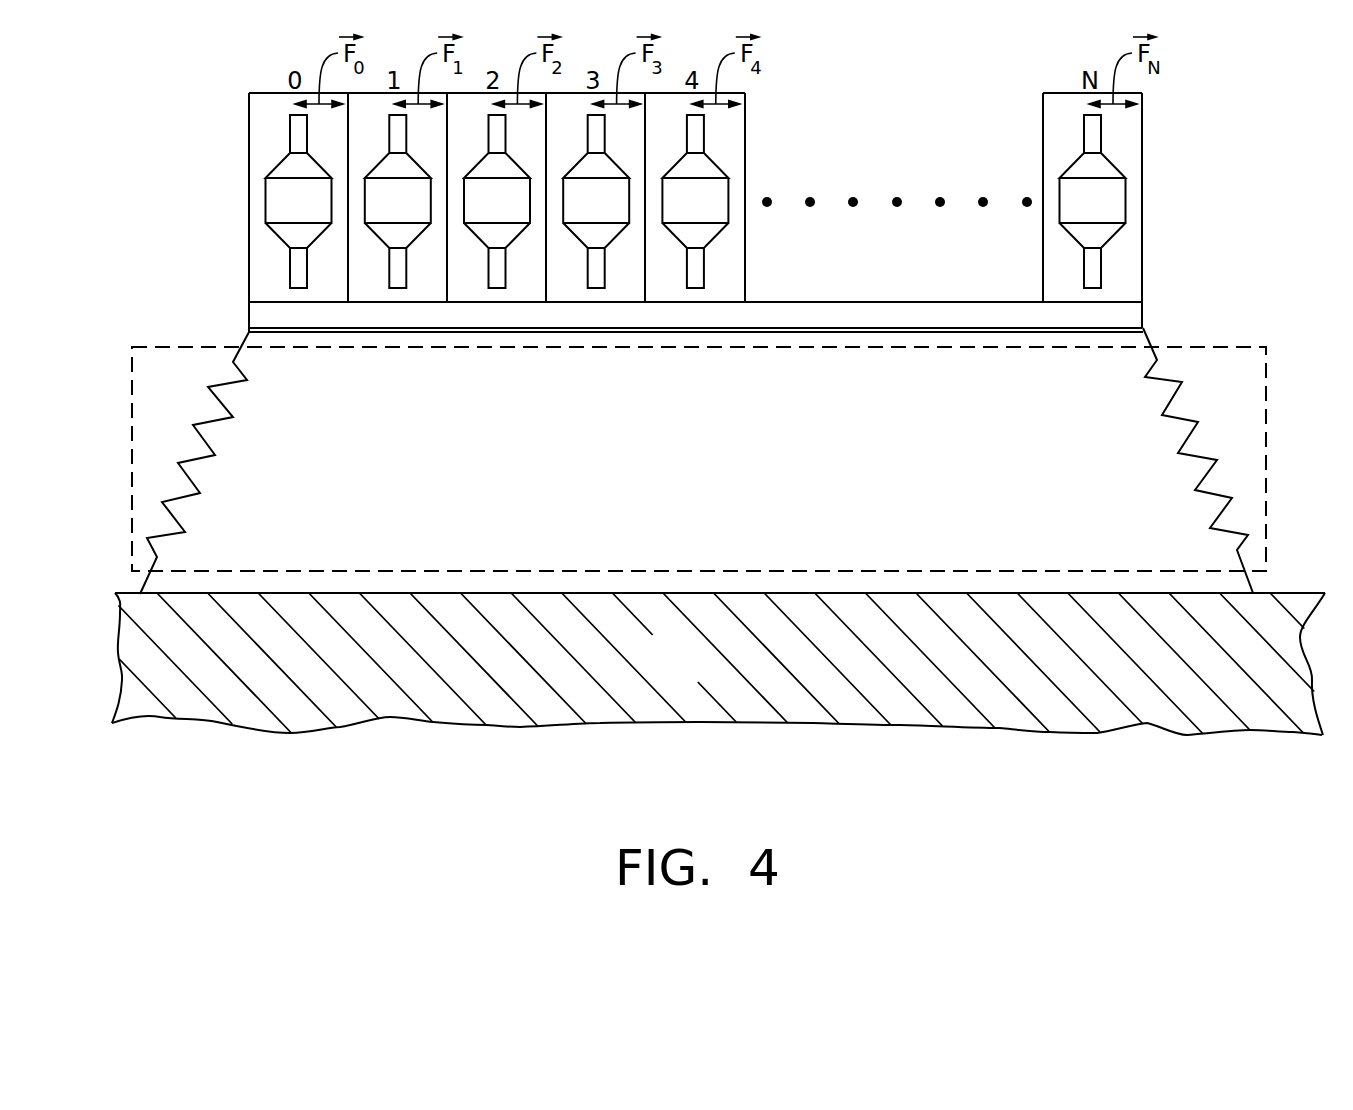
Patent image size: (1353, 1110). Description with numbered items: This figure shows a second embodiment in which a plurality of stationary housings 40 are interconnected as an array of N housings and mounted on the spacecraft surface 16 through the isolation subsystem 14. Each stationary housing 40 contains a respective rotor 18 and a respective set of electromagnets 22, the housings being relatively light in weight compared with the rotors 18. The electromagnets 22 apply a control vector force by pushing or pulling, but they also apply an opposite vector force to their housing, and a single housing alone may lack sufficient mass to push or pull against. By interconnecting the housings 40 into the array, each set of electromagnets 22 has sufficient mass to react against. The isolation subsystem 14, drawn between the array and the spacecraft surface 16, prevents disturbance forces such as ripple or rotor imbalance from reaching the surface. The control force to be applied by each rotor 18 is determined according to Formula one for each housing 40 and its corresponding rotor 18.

The isolation subsystem 14 is at (217, 348).
The spacecraft surface 16 is at (692, 671).
The rotor 18 is at (275, 200).
The electromagnets 22 is at (288, 128).
The stationary housing 40 is at (220, 233).